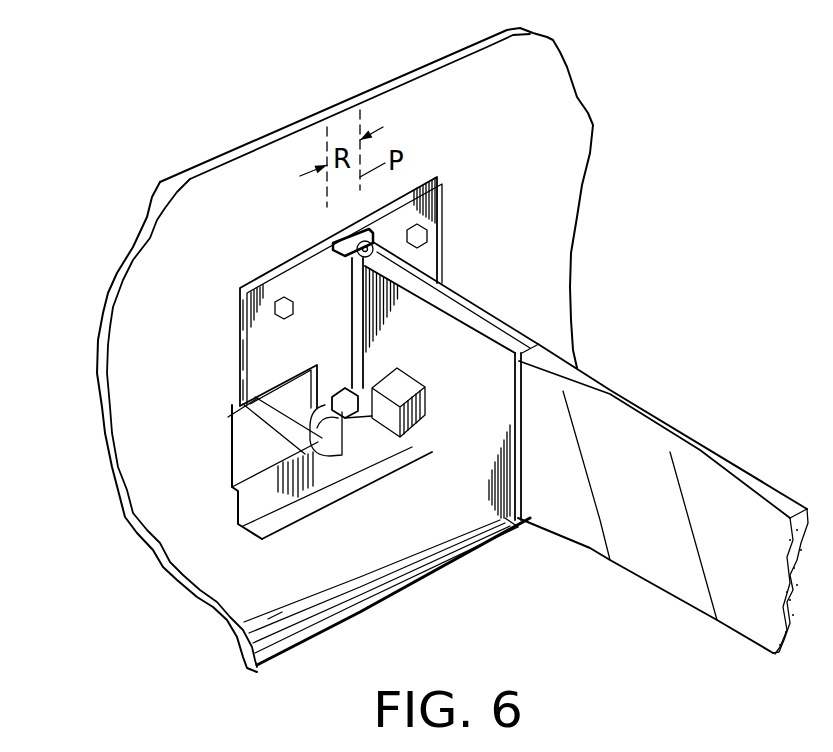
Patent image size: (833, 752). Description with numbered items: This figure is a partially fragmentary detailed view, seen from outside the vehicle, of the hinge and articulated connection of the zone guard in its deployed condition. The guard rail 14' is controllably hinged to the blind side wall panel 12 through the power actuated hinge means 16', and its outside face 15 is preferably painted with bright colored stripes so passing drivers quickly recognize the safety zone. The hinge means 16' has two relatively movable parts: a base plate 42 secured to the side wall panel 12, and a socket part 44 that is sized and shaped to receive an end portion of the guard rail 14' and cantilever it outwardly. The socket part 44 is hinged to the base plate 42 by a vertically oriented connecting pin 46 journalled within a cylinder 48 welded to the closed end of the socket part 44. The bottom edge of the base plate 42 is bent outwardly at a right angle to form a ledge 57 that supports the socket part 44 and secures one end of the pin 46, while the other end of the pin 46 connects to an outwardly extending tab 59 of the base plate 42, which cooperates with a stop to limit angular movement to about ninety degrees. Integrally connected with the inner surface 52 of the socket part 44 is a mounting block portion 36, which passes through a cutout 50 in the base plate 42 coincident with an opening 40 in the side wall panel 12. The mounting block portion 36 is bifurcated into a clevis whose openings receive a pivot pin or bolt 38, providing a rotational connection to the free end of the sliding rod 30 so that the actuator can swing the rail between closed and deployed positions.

The side wall panel 12 is at (509, 109).
The guard rail 14' is at (663, 499).
The outside face 15 is at (677, 474).
The power actuated hinge means 16' is at (568, 217).
The sliding rod 30 is at (230, 416).
The mounting block portion 36 is at (360, 420).
The pivot pin or bolt 38 is at (508, 522).
The opening 40 is at (272, 467).
The base plate 42 is at (268, 278).
The socket part 44 is at (522, 322).
The connecting pin 46 is at (440, 188).
The cylinder 48 is at (335, 240).
The cutout 50 is at (295, 378).
The inner surface 52 is at (483, 382).
The ledge 57 is at (300, 520).
The tab 59 is at (360, 243).